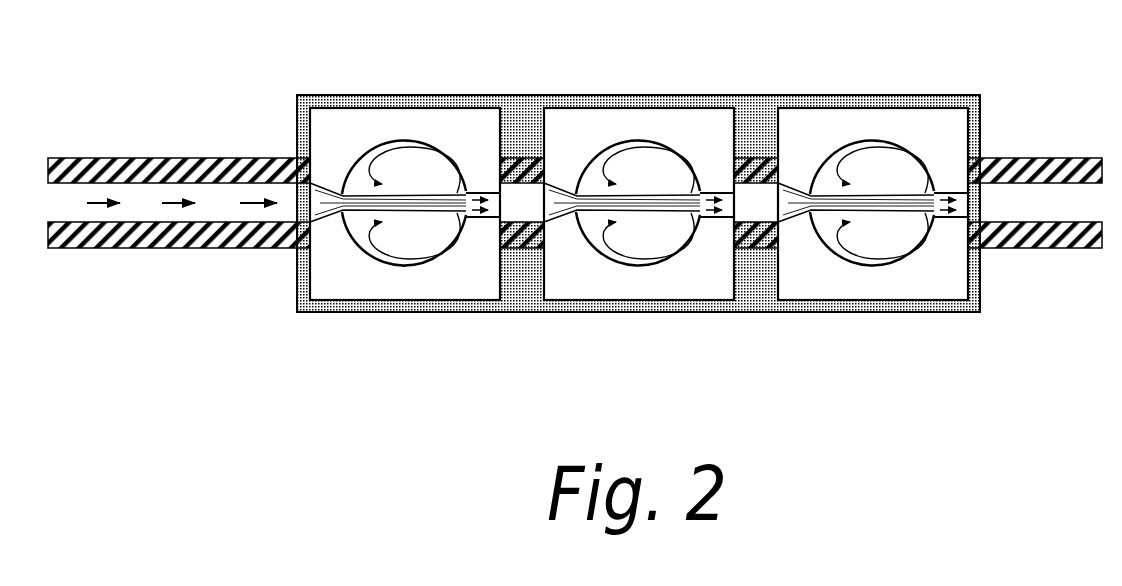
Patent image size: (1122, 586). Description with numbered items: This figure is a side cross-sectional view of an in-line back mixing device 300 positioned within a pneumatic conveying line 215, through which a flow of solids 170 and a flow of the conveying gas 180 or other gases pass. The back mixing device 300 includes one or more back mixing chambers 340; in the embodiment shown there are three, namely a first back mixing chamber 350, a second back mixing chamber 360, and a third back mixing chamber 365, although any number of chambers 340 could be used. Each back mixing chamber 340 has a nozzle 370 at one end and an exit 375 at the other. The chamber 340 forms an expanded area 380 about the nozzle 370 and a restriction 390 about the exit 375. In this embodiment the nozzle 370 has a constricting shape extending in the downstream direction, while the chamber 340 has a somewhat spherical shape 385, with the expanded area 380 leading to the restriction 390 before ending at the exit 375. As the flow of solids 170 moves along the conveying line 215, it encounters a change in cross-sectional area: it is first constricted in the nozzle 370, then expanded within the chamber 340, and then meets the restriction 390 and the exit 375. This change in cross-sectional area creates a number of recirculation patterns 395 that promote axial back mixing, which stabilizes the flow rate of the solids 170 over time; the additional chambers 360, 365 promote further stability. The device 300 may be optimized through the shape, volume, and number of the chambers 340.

The back mixing device 300 is at (288, 72).
The pneumatic conveying line 215 is at (173, 159).
The flow of solids 170 is at (87, 203).
The flow of the conveying gas 180 is at (162, 203).
The back mixing chamber 340 is at (385, 265).
The first back mixing chamber 350 is at (407, 140).
The second back mixing chamber 360 is at (641, 142).
The third back mixing chamber 365 is at (878, 142).
The nozzle 370 is at (327, 181).
The exit 375 is at (487, 193).
The expanded area 380 is at (375, 258).
The somewhat spherical shape 385 is at (408, 266).
The restriction 390 is at (460, 232).
The recirculation patterns 395 is at (447, 254).